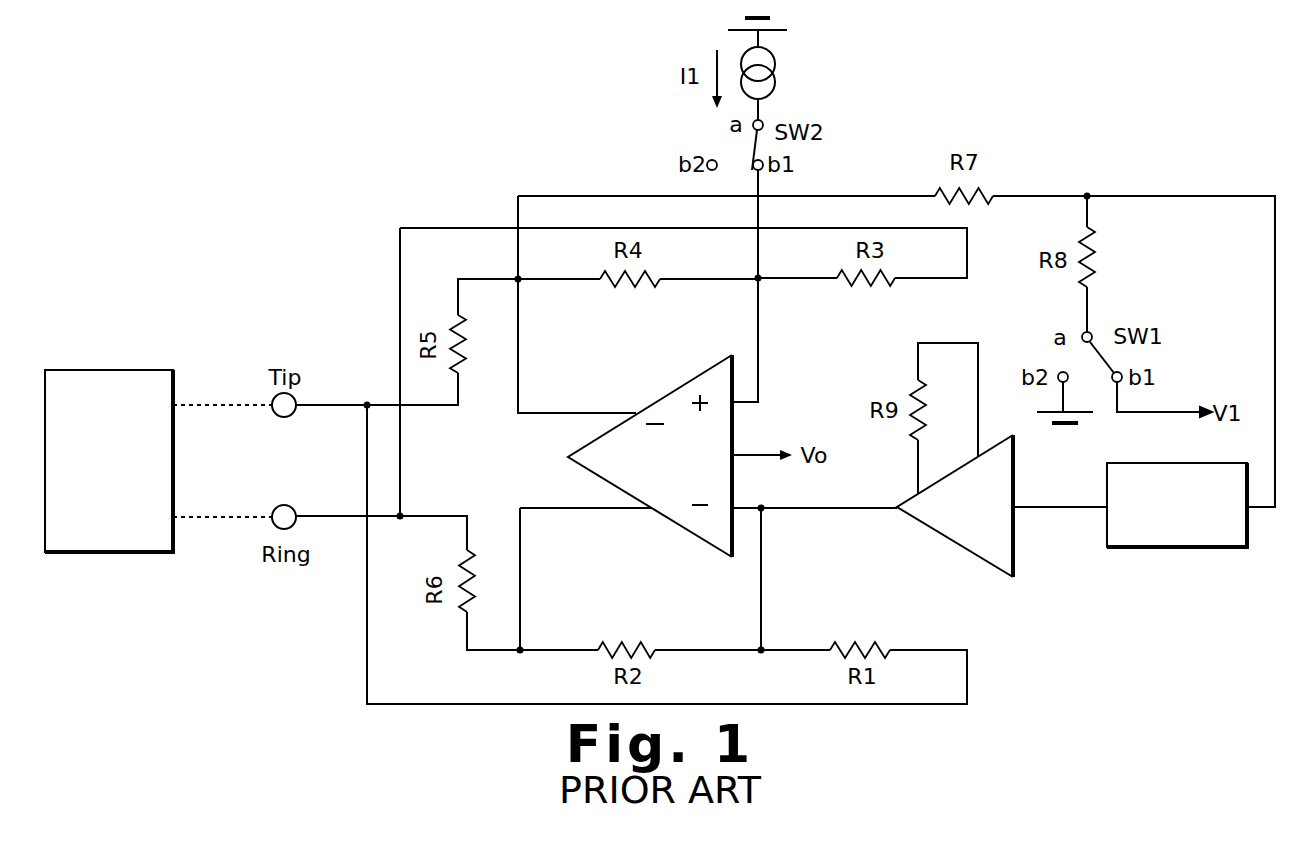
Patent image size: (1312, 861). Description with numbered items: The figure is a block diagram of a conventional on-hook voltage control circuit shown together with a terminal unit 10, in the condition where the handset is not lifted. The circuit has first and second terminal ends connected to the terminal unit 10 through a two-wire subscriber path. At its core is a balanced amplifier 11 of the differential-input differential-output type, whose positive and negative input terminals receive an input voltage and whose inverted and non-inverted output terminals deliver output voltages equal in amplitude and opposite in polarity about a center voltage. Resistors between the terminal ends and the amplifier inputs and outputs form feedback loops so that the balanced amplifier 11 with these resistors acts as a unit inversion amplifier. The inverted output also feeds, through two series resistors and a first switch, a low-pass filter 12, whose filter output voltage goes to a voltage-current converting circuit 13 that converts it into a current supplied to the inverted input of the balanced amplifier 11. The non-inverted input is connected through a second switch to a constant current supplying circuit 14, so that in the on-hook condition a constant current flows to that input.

The terminal unit 10 is at (103, 370).
The balanced amplifier 11 is at (653, 404).
The low-pass filter 12 is at (1168, 548).
The voltage-current converting circuit 13 is at (934, 532).
The constant current supplying circuit 14 is at (776, 74).